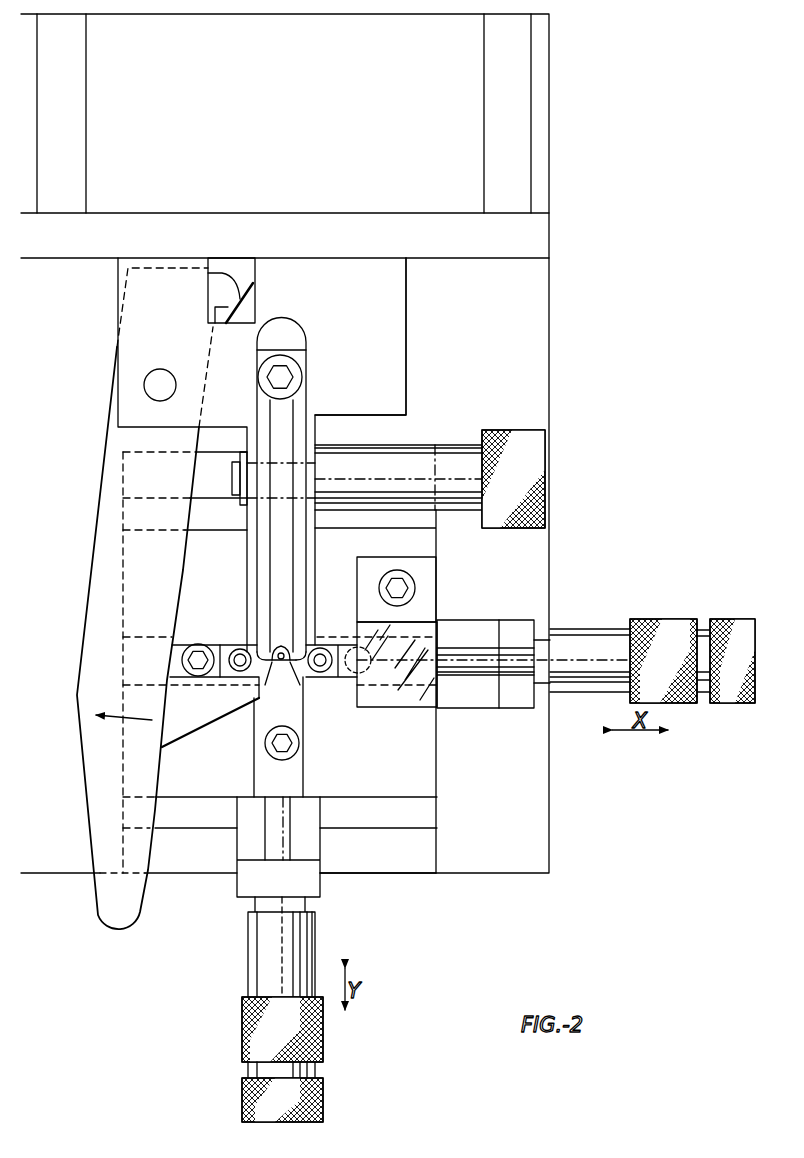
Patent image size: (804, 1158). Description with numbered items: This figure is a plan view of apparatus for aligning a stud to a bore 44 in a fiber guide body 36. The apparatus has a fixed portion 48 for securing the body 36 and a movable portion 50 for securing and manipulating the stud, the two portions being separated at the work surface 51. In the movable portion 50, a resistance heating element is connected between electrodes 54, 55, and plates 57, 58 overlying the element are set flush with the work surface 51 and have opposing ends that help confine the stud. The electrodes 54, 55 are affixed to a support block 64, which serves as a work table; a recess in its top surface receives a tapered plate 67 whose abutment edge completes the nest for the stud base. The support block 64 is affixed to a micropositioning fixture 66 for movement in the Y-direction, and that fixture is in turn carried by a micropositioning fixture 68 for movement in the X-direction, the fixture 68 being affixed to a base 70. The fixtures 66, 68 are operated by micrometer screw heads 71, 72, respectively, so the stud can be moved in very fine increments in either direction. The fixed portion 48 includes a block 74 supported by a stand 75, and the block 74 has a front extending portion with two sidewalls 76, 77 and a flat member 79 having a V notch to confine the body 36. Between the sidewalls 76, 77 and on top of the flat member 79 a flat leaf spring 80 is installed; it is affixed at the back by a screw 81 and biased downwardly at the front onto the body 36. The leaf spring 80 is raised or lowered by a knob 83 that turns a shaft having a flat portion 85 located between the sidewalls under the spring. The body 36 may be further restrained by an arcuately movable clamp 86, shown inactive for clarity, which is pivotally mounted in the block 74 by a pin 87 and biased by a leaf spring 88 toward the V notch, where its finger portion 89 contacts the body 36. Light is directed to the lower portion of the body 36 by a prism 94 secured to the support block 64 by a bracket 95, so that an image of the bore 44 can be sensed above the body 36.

The body 36 is at (293, 668).
The bore 44 is at (281, 670).
The fixed portion 48 is at (438, 370).
The movable portion 50 is at (508, 576).
The work surface 51 is at (438, 762).
The electrode 54 is at (187, 642).
The electrode 55 is at (336, 642).
The plate 57 is at (233, 648).
The plate 58 is at (326, 673).
The support block 64 is at (438, 789).
The micropositioning fixture 66 is at (236, 850).
The plate 67 is at (291, 772).
The micropositioning fixture 68 is at (490, 620).
The base 70 is at (424, 857).
The micrometer screw head 71 is at (242, 1040).
The micrometer screw head 72 is at (680, 619).
The block 74 is at (407, 345).
The stand 75 is at (549, 243).
The sidewall 76 is at (250, 557).
The sidewall 77 is at (313, 549).
The flat member 79 is at (300, 574).
The leaf spring 80 is at (280, 420).
The screw 81 is at (298, 375).
The knob 83 is at (512, 430).
The flat portion 85 is at (263, 492).
The clamp 86 is at (80, 755).
The pin 87 is at (162, 369).
The leaf spring 88 is at (243, 318).
The finger portion 89 is at (214, 730).
The prism 94 is at (421, 700).
The bracket 95 is at (437, 569).